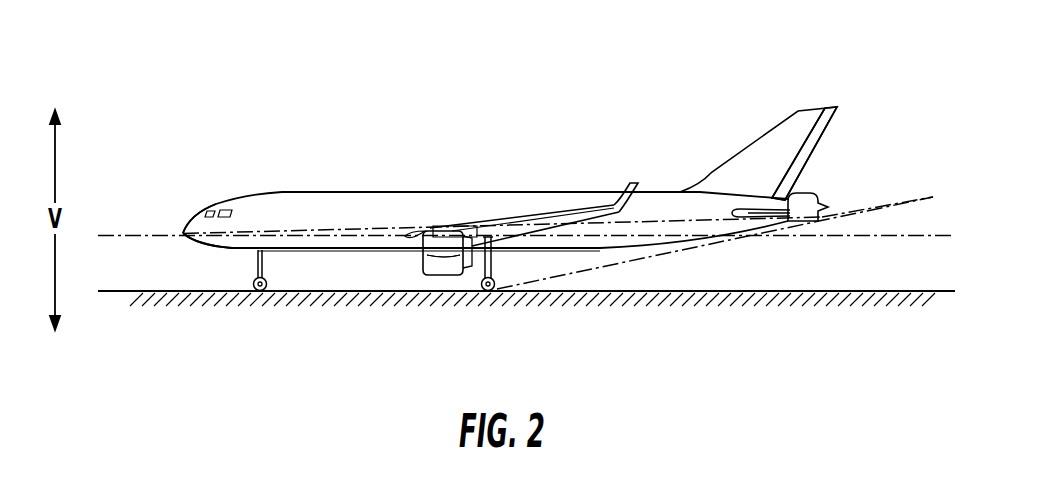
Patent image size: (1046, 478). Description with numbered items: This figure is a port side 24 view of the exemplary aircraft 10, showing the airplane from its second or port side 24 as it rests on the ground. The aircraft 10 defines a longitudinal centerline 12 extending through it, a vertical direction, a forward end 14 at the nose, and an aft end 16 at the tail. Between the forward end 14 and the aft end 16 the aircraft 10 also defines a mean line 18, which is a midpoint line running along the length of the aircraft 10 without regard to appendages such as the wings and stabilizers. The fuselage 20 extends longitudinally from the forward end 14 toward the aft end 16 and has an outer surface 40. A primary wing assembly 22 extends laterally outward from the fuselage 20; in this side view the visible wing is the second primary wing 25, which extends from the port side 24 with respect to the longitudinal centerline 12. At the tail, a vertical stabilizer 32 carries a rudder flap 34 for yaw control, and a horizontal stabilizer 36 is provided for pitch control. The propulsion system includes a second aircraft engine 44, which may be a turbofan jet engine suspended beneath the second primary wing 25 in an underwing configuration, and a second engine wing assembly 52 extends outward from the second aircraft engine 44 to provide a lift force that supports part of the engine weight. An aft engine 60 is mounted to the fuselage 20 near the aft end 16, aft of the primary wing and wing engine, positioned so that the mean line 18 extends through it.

The aircraft 10 is at (236, 143).
The longitudinal centerline 12 is at (153, 235).
The forward end 14 is at (190, 245).
The aft end 16 is at (843, 208).
The mean line 18 is at (330, 227).
The fuselage 20 is at (278, 245).
The primary wing assembly 22 is at (567, 218).
The port side 24 is at (597, 253).
The second primary wing 25 is at (598, 203).
The vertical stabilizer 32 is at (782, 140).
The rudder flap 34 is at (823, 133).
The horizontal stabilizer 36 is at (780, 222).
The outer surface 40 is at (429, 190).
The second aircraft engine 44 is at (437, 279).
The second engine wing assembly 52 is at (447, 256).
The aft engine 60 is at (818, 189).